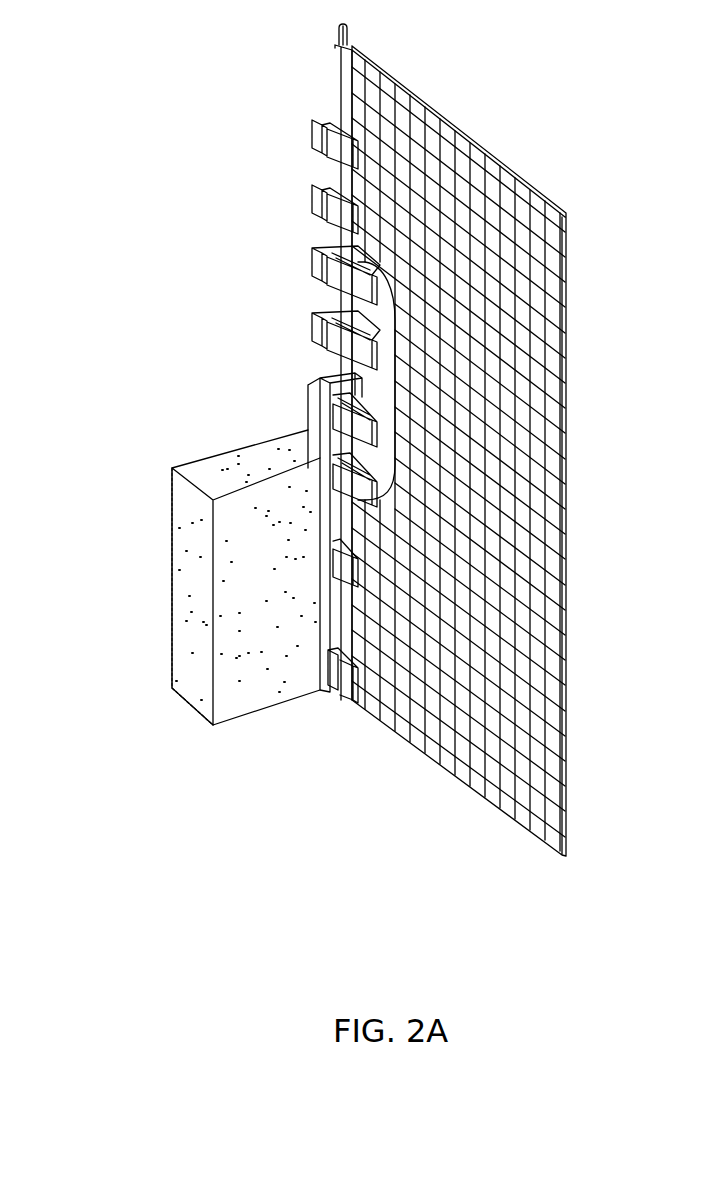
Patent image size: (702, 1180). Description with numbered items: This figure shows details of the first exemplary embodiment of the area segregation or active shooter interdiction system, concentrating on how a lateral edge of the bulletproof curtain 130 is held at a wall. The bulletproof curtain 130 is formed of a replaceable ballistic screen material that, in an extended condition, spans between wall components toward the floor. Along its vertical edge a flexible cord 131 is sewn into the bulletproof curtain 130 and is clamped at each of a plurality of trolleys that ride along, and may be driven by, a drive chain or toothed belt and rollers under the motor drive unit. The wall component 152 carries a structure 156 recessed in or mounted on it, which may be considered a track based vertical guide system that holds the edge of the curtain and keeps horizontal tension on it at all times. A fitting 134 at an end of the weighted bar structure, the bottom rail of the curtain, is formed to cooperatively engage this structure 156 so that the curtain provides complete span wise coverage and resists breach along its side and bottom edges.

The bulletproof curtain 130 is at (450, 450).
The flexible cord 131 is at (340, 33).
The wall component 152 is at (320, 383).
The structure recessed in or mounted on the wall component 156 is at (180, 608).
The fitting 134 is at (340, 683).